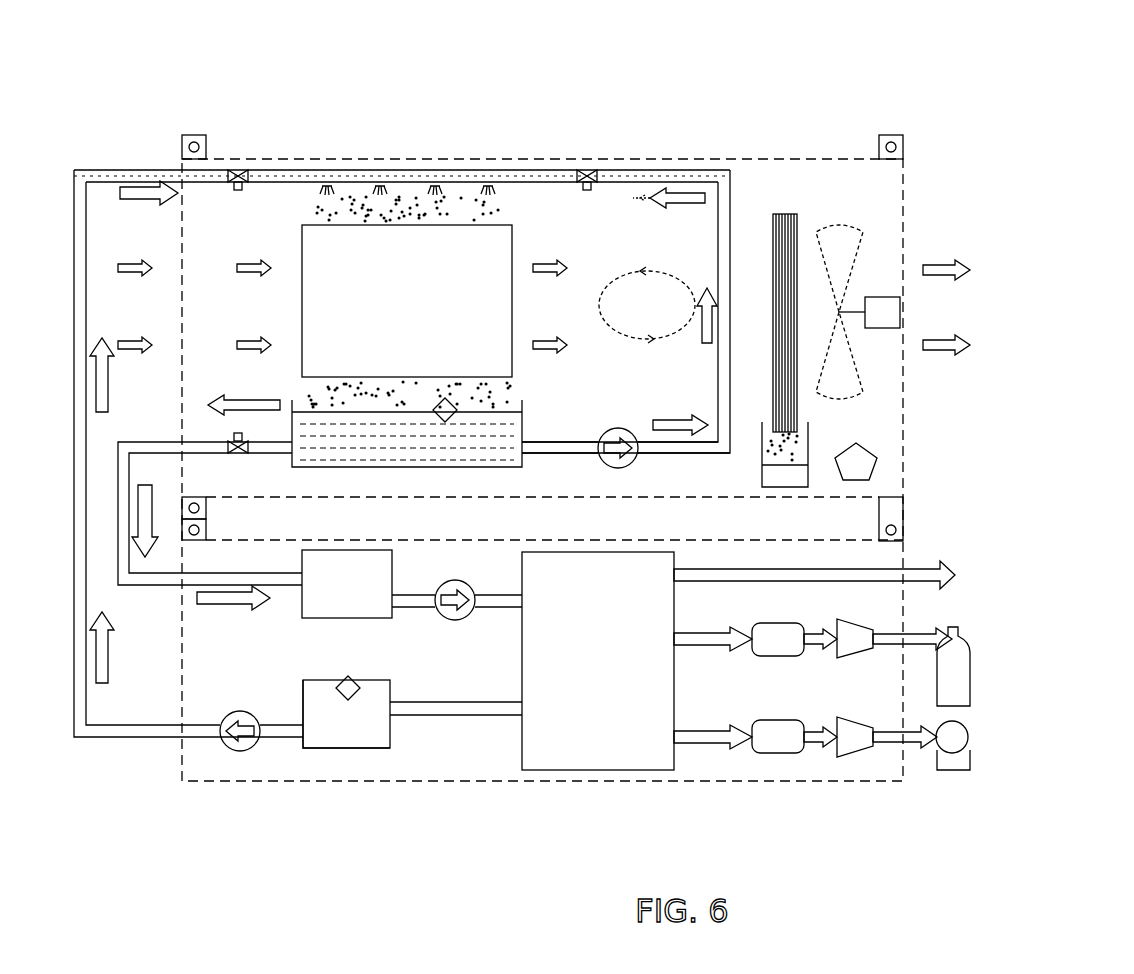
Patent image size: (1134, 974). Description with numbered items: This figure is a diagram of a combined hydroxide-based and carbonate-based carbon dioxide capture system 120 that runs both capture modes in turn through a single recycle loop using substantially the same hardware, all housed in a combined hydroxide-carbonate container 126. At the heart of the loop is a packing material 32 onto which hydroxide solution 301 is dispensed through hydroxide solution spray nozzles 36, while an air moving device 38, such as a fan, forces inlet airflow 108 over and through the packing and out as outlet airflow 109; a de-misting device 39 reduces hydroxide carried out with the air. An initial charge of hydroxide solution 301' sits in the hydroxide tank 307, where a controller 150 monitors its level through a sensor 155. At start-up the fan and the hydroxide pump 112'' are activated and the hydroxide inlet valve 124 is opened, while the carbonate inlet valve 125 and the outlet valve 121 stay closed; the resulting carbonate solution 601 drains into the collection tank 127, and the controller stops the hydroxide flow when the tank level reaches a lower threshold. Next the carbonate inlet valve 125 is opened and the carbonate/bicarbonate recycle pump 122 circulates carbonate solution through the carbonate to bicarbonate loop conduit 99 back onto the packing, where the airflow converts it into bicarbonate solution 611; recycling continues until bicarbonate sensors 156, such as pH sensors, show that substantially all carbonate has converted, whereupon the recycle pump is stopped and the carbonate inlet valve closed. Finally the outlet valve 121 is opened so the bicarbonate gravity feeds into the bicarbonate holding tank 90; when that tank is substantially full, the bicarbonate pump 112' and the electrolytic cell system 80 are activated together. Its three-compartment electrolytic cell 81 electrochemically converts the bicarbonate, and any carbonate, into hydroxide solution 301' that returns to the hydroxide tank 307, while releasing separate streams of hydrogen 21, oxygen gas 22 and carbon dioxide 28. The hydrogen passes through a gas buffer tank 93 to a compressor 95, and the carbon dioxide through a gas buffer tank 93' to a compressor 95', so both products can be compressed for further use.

The combined hydroxide-based and carbonate-based carbon dioxide capture system 120 is at (437, 133).
The combined hydroxide-carbonate container 126 is at (790, 159).
The carbonate to bicarbonate loop conduit 99 is at (722, 178).
The hydroxide solution 301 is at (402, 135).
The hydroxide inlet valve 124 is at (238, 170).
The carbonate inlet valve 125 is at (587, 170).
The hydroxide solution spray nozzles 36 is at (327, 185).
The packing material 32 is at (505, 255).
The collection tank 127 is at (500, 418).
The bicarbonate sensor 156 is at (445, 410).
The carbonate/bicarbonate recycle pump 122 is at (612, 432).
The bicarbonate solution 611 is at (168, 448).
The bicarbonate tank outlet valve 121 is at (238, 433).
The inlet airflow 108 is at (132, 268).
The carbonate solution 601 is at (668, 447).
The outlet airflow 109 is at (947, 268).
The de-misting device 39 is at (785, 214).
The air moving device 38 is at (838, 240).
The controller 150 is at (862, 465).
The bicarbonate holding tank 90 is at (333, 568).
The bicarbonate pump 112' is at (446, 565).
The hydroxide pump 112'' is at (231, 697).
The hydroxide tank 307 is at (372, 730).
The hydroxide solution 301' is at (325, 762).
The sensor 155 is at (348, 688).
The electrolytic cell system 80 is at (520, 548).
The three-compartment electrolytic cell 81 is at (598, 740).
The oxygen gas 22 is at (748, 578).
The hydrogen 21 is at (705, 640).
The gas buffer tank 93 is at (794, 621).
The compressor 95 is at (903, 646).
The carbon dioxide 28 is at (705, 737).
The gas buffer tank 93' is at (794, 705).
The compressor 95' is at (903, 714).